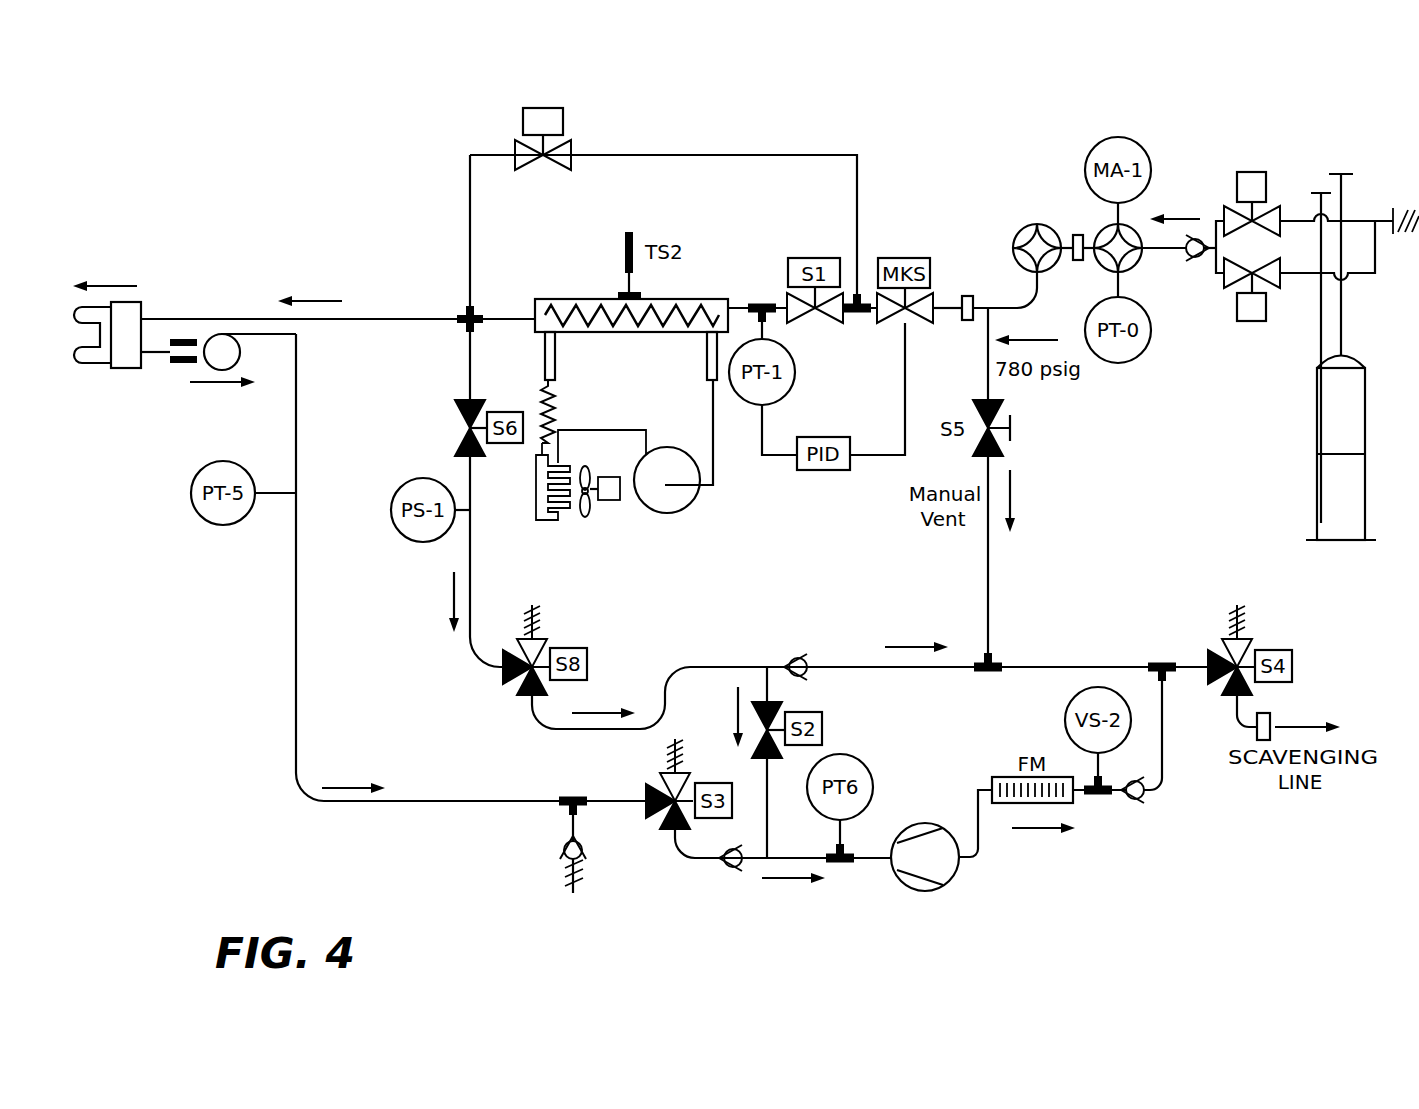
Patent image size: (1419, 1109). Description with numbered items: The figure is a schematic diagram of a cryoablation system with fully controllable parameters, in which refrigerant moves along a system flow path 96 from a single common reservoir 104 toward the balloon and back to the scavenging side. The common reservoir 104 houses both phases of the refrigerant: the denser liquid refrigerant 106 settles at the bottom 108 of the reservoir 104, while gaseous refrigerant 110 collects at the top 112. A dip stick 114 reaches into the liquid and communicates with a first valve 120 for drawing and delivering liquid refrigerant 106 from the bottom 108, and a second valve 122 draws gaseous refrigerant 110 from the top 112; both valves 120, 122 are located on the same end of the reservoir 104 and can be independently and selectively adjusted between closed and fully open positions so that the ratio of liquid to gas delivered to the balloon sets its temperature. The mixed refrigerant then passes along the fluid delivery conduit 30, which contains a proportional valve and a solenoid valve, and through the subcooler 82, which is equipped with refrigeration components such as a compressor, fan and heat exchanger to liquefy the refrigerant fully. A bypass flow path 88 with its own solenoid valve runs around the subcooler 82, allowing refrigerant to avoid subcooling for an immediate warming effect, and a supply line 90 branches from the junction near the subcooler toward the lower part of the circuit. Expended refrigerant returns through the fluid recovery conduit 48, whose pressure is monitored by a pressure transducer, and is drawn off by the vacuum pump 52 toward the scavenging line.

The fluid delivery conduit 30 is at (374, 318).
The fluid recovery conduit 48 is at (298, 422).
The vacuum pump 52 is at (925, 857).
The subcooler 82 is at (636, 333).
The bypass flow path 88 is at (759, 122).
The supply line 90 is at (466, 312).
The system flow path 96 is at (295, 163).
The common reservoir 104 is at (1302, 382).
The liquid refrigerant 106 is at (1345, 512).
The bottom of the reservoir 108 is at (1340, 543).
The gaseous refrigerant 110 is at (1340, 424).
The top of the reservoir 112 is at (1357, 362).
The dip stick 114 is at (1321, 478).
The first valve 120 is at (1292, 228).
The second valve 122 is at (1253, 171).